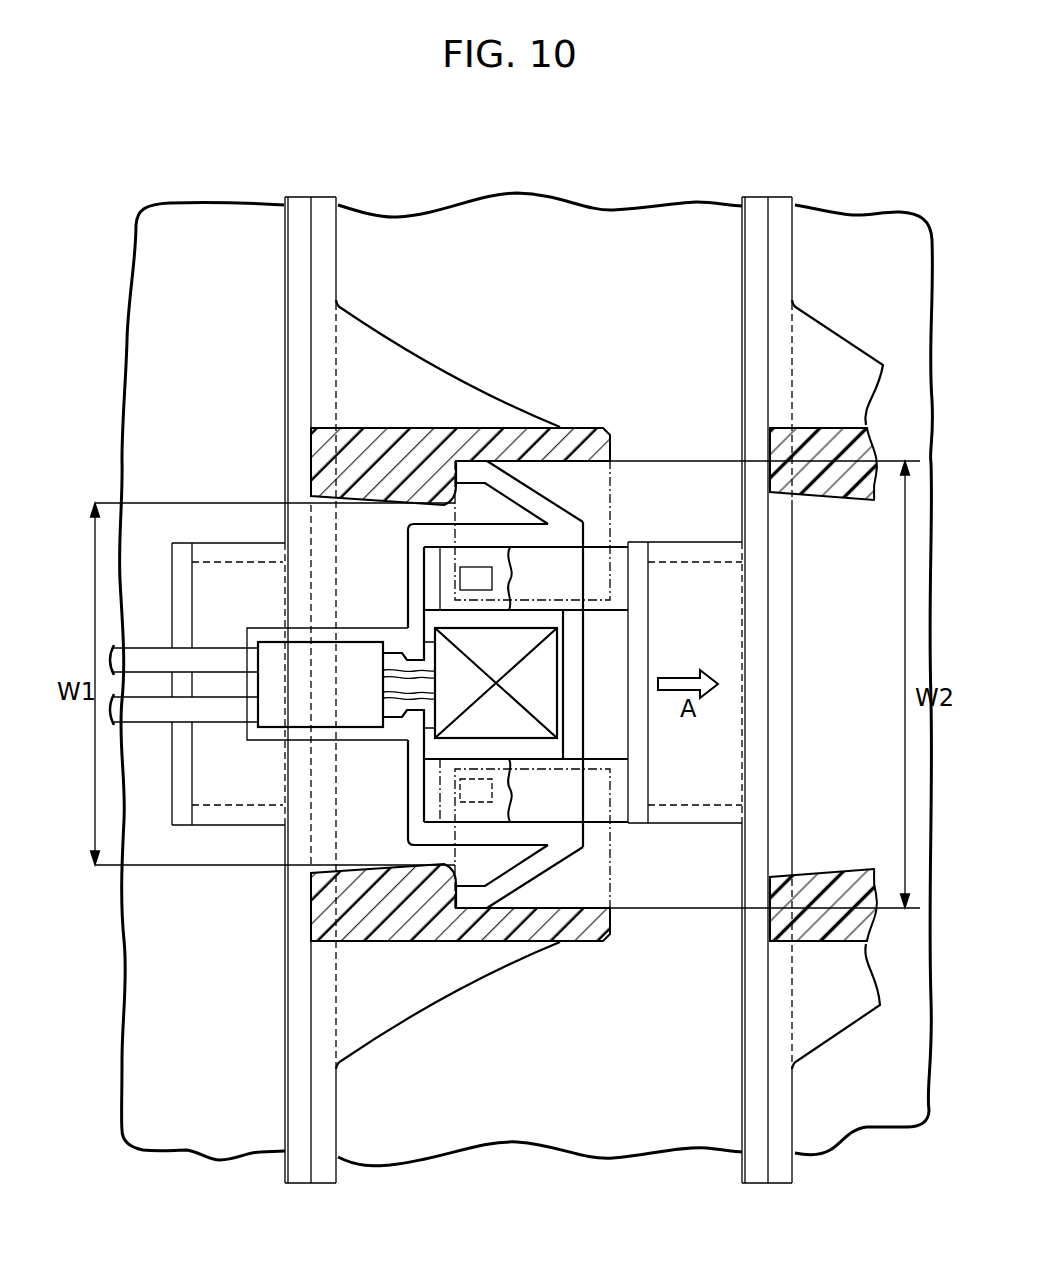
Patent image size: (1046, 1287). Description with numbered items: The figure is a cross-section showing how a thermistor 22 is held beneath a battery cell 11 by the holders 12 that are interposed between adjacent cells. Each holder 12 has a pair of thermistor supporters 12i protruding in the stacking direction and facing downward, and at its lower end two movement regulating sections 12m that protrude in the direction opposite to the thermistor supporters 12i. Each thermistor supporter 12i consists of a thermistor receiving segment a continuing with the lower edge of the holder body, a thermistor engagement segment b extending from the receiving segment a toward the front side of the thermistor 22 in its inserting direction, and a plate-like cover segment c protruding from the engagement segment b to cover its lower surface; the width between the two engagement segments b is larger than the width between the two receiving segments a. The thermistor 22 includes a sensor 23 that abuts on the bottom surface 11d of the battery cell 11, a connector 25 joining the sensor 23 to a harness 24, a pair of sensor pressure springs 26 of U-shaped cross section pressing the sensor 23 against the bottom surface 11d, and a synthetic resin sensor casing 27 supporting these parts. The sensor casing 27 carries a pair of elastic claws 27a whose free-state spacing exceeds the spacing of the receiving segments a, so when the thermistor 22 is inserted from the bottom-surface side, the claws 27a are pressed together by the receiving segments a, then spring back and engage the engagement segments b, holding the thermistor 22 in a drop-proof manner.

The battery cell 11 is at (212, 198).
The bottom surface 11d is at (243, 280).
The holder 12 is at (282, 405).
The thermistor supporter 12i is at (419, 353).
The movement regulating section 12m is at (183, 586).
The thermistor 22 is at (397, 615).
The sensor 23 is at (540, 690).
The harness 24 is at (152, 712).
The connector 25 is at (300, 710).
The sensor pressure spring 26 is at (553, 570).
The sensor casing 27 is at (404, 767).
The elastic claw 27a is at (530, 483).
The thermistor receiving segment a is at (345, 507).
The thermistor engagement segment b is at (458, 461).
The cover segment c is at (613, 493).